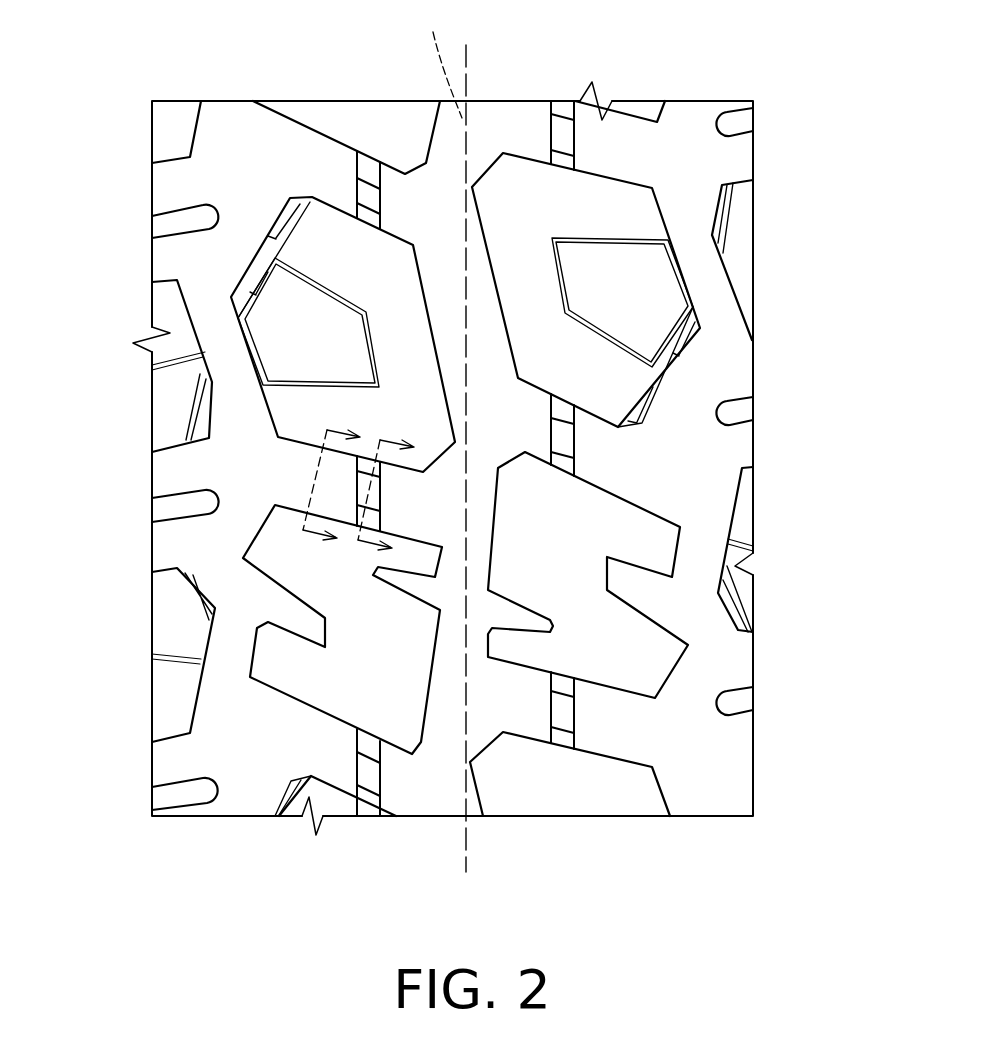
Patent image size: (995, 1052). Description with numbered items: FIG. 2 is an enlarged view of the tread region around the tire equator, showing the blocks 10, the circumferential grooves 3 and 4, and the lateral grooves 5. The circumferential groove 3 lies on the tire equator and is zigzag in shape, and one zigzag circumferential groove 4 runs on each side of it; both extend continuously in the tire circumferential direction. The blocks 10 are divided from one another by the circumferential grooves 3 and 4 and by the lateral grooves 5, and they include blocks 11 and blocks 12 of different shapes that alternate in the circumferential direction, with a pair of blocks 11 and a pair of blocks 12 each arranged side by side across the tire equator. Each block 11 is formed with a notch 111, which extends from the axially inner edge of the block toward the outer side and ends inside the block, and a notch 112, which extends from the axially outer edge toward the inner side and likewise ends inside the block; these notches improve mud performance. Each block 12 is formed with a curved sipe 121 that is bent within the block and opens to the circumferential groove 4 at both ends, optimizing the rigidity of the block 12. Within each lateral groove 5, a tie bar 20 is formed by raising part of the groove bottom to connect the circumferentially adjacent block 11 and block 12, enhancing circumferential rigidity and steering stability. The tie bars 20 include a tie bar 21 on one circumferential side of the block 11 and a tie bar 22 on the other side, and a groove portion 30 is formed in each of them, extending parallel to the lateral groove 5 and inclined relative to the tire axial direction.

The circumferential groove 3 is at (480, 297).
The circumferential groove 4 is at (220, 333).
The lateral groove 5 is at (297, 478).
The block 10 is at (481, 463).
The block 11 is at (372, 688).
The block 12 is at (340, 255).
The tie bar 20 is at (461, 500).
The tie bar 21 is at (373, 500).
The tie bar 22 is at (372, 788).
The groove portion 30 is at (560, 436).
The notch 111 is at (417, 583).
The notch 112 is at (300, 620).
The curved sipe 121 is at (642, 240).